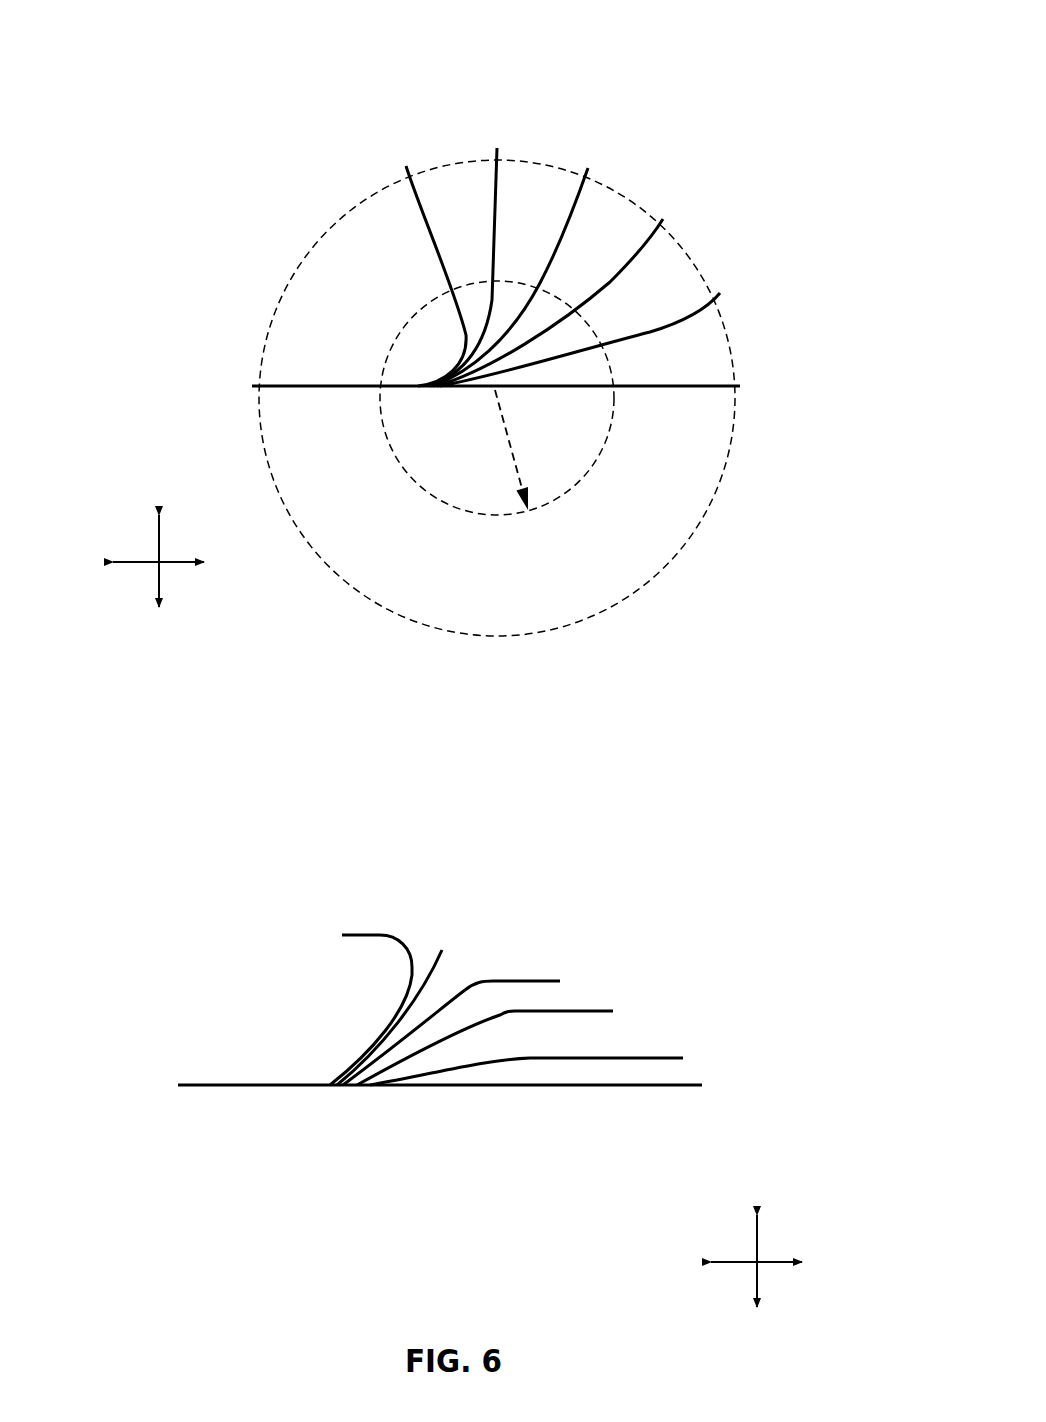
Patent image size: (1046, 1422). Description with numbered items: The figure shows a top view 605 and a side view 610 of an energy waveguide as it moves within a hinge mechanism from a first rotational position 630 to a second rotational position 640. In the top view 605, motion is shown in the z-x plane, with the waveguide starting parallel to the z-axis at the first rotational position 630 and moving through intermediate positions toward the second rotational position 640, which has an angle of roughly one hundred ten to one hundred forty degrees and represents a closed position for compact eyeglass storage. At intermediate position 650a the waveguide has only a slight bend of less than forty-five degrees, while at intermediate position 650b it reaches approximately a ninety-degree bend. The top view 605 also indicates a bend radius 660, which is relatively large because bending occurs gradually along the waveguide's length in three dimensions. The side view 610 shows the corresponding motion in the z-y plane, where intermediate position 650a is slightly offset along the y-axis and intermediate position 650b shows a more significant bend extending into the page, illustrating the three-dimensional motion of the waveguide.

The top view 605 is at (562, 24).
The side view 610 is at (557, 836).
The first rotational position 630 is at (665, 390).
The second rotational position 640 is at (353, 928).
The intermediate position 650a is at (652, 1047).
The intermediate position 650b is at (500, 178).
The bend radius 660 is at (508, 452).